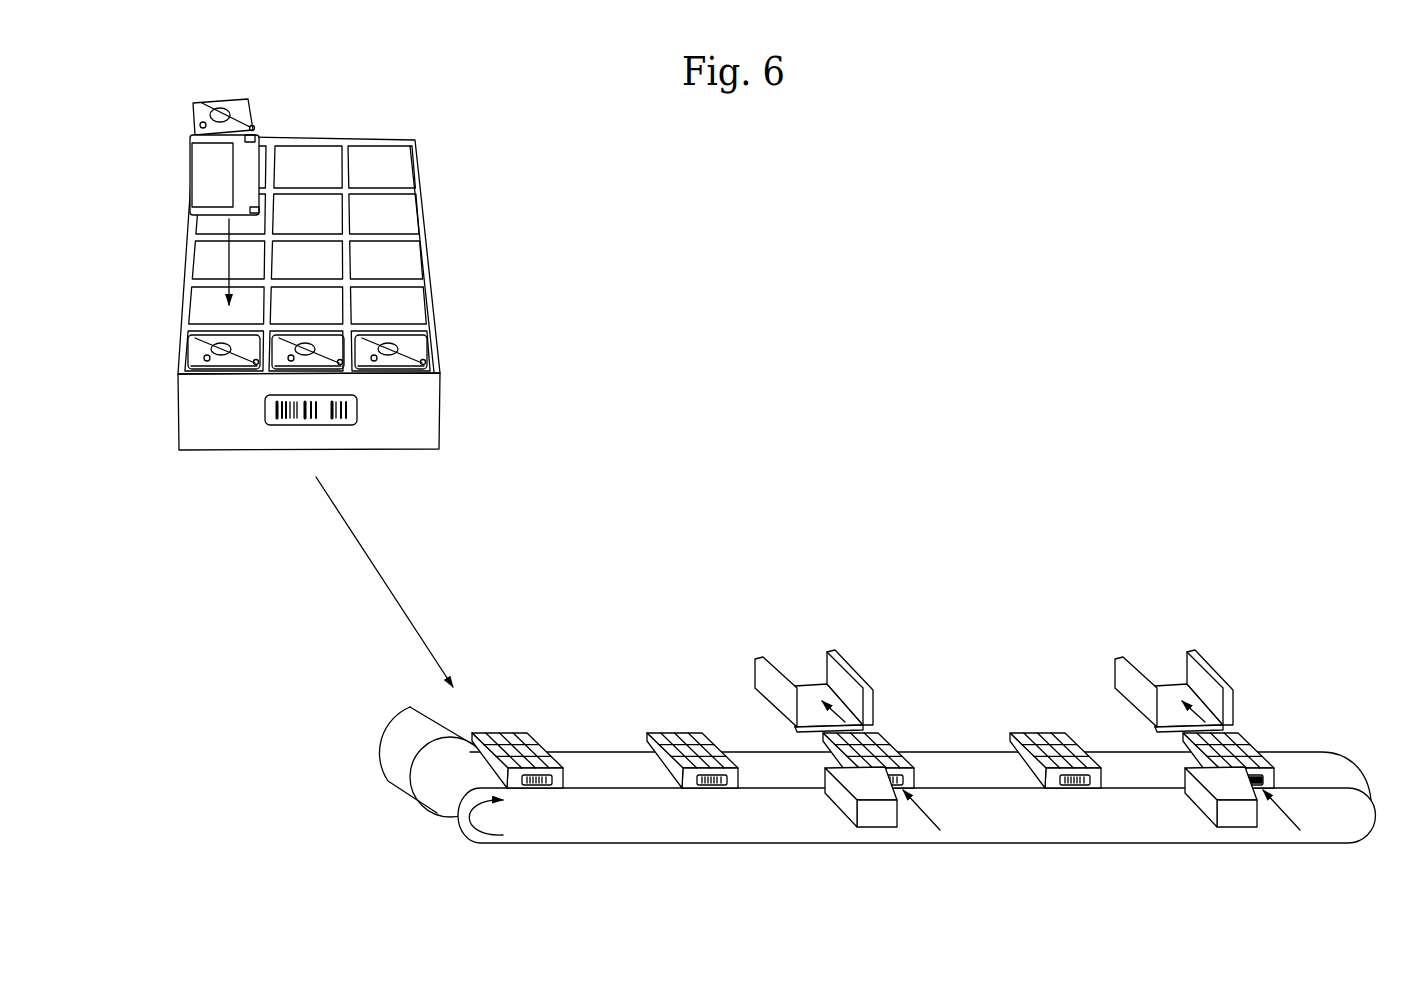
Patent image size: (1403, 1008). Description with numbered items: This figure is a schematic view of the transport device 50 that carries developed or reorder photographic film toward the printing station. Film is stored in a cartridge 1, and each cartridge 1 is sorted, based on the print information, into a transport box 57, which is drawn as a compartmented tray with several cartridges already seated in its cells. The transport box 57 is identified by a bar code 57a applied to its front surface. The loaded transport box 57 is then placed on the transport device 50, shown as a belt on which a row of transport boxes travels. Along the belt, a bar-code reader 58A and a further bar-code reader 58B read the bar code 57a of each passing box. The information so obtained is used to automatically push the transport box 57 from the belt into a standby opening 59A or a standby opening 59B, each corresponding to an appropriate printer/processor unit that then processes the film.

The cartridge 1 is at (197, 155).
The transport box 57 is at (427, 247).
The bar code 57a is at (284, 425).
The transport device 50 is at (657, 850).
The bar-code reader 58A is at (870, 823).
The bar-code reader 58B is at (1230, 818).
The standby opening 59A is at (801, 685).
The standby opening 59B is at (1166, 688).